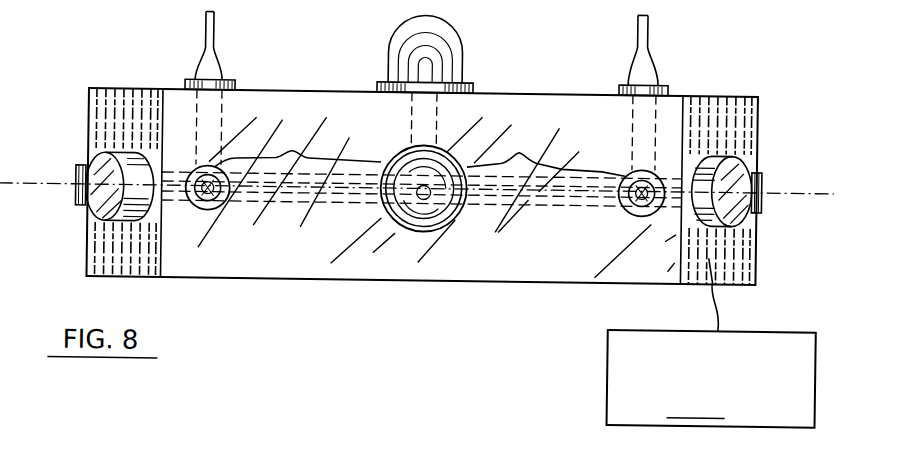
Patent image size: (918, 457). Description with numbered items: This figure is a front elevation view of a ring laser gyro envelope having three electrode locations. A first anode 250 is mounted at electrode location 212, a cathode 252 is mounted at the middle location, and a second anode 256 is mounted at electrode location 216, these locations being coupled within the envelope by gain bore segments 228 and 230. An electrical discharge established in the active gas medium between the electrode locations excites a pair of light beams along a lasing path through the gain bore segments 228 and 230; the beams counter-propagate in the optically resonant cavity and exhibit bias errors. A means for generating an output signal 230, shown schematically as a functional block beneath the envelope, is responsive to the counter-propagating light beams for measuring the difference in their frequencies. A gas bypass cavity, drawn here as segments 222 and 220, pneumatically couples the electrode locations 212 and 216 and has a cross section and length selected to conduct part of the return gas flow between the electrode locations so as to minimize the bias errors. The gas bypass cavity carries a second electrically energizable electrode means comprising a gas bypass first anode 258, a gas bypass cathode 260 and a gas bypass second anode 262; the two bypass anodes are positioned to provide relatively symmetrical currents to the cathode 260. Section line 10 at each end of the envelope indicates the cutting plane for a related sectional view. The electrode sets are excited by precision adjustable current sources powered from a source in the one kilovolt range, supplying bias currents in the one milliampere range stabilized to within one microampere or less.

The section line 10 is at (44, 218).
The electrode location 212 is at (224, 207).
The electrode location 216 is at (637, 208).
The gas bypass cavity segment 220 is at (546, 154).
The gas bypass cavity segment 222 is at (298, 148).
The gain bore segment 228 is at (300, 206).
The means for generating an output signal 230 is at (552, 206).
The first anode 250 is at (204, 208).
The cathode 252 is at (446, 222).
The second anode 256 is at (653, 212).
The gas bypass first anode 258 is at (216, 64).
The gas bypass cathode 260 is at (440, 56).
The gas bypass second anode 262 is at (650, 62).